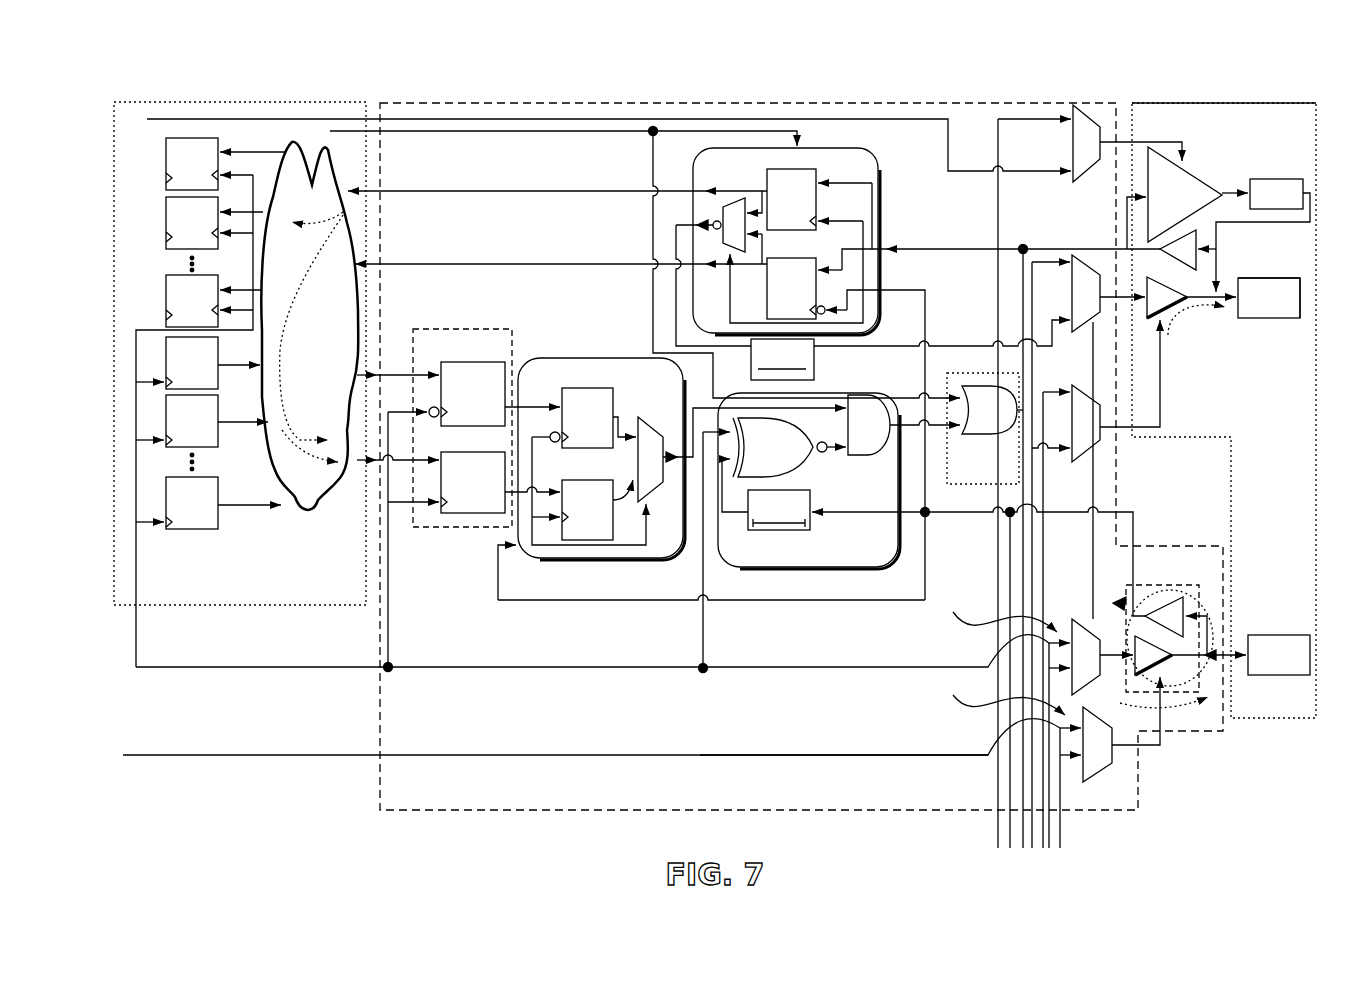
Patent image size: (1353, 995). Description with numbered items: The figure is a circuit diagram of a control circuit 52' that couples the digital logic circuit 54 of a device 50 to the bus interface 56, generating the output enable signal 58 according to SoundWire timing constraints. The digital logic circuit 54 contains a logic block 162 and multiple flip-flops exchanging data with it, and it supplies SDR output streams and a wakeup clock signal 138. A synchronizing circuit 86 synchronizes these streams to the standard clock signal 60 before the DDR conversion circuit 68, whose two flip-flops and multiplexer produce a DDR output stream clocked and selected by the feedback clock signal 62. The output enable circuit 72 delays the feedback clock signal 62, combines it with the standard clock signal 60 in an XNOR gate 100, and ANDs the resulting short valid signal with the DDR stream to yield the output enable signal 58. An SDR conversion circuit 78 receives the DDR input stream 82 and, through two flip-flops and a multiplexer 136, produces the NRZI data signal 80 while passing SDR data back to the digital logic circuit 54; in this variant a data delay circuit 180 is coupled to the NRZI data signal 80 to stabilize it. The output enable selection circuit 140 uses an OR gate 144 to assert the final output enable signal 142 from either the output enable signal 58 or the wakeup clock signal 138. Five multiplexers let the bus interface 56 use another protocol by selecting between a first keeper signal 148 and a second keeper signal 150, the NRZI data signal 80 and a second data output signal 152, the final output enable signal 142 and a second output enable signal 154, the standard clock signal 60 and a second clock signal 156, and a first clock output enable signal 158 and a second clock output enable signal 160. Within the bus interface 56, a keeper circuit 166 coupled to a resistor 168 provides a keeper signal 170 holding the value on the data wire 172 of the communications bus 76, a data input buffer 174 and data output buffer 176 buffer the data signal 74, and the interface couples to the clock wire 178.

The device 50 is at (1112, 65).
The control circuit 52' is at (801, 429).
The digital logic circuit 54 is at (270, 605).
The bus interface 56 is at (1255, 103).
The output enable signal 58 is at (910, 434).
The standard clock signal 60 is at (600, 675).
The feedback clock signal 62 is at (758, 605).
The DDR conversion circuit 68 is at (560, 358).
The output enable circuit 72 is at (866, 568).
The data signal 74 is at (1292, 320).
The communications bus 76 is at (1211, 493).
The SDR conversion circuit 78 is at (880, 160).
The NRZI data signal 80 is at (975, 340).
The DDR input stream 82 is at (975, 243).
The synchronizing circuit 86 is at (512, 329).
The XOR-based gate 100 is at (815, 463).
The multiplexer 136 is at (735, 200).
The wakeup clock signal 138 is at (545, 135).
The output enable selection circuit 140 is at (972, 486).
The final output enable signal 142 is at (1066, 455).
The OR-based gate 144 is at (985, 434).
The first keeper signal 148 is at (925, 112).
The second keeper signal 150 is at (1045, 126).
The second data output signal 152 is at (1052, 268).
The second output enable signal 154 is at (1065, 399).
The second clock signal 156 is at (994, 610).
The first clock output enable signal 158 is at (845, 745).
The second clock output enable signal 160 is at (998, 693).
The logic block 162 is at (308, 369).
The keeper circuit 166 is at (1192, 172).
The resistor 168 is at (1255, 179).
The keeper signal 170 is at (1230, 267).
The data wire 172 is at (1243, 320).
The data input buffer 174 is at (1198, 308).
The data output buffer 176 is at (1170, 320).
The clock wire 178 is at (1280, 635).
The data delay circuit 180 is at (815, 358).